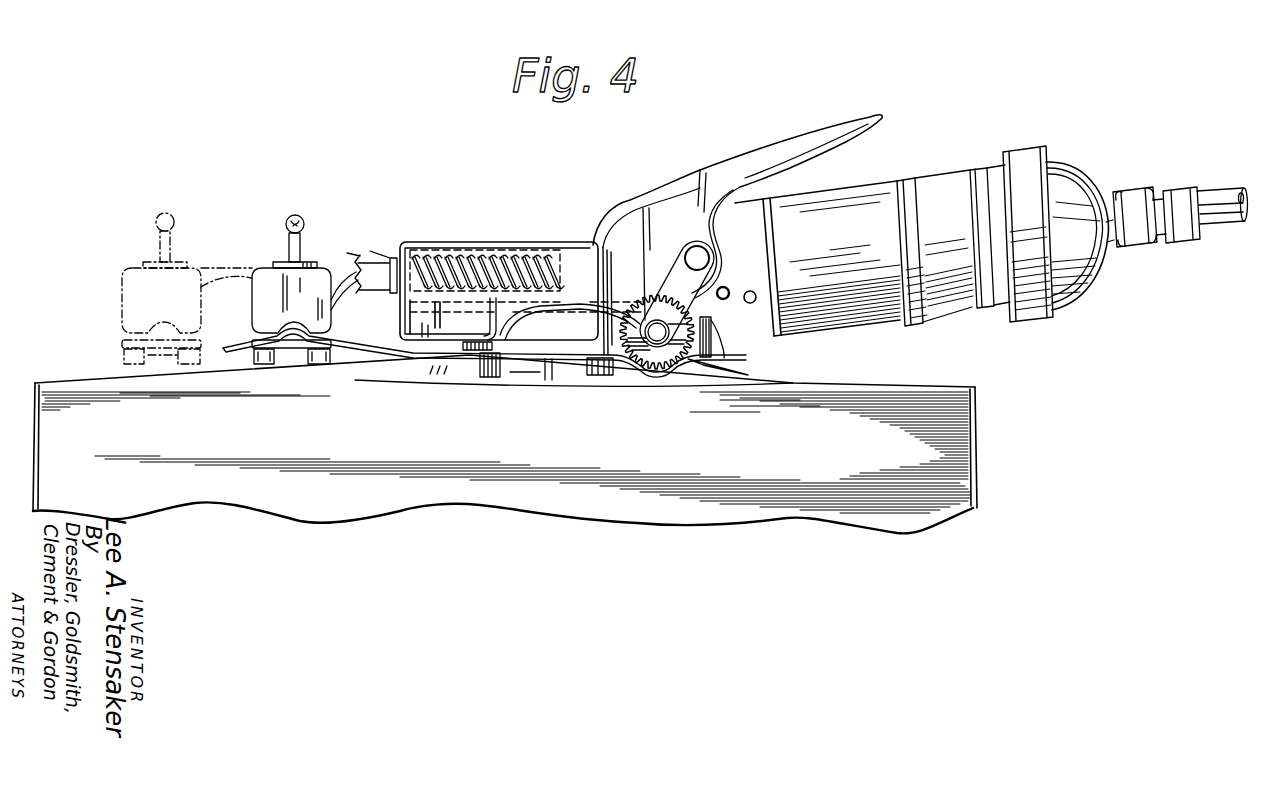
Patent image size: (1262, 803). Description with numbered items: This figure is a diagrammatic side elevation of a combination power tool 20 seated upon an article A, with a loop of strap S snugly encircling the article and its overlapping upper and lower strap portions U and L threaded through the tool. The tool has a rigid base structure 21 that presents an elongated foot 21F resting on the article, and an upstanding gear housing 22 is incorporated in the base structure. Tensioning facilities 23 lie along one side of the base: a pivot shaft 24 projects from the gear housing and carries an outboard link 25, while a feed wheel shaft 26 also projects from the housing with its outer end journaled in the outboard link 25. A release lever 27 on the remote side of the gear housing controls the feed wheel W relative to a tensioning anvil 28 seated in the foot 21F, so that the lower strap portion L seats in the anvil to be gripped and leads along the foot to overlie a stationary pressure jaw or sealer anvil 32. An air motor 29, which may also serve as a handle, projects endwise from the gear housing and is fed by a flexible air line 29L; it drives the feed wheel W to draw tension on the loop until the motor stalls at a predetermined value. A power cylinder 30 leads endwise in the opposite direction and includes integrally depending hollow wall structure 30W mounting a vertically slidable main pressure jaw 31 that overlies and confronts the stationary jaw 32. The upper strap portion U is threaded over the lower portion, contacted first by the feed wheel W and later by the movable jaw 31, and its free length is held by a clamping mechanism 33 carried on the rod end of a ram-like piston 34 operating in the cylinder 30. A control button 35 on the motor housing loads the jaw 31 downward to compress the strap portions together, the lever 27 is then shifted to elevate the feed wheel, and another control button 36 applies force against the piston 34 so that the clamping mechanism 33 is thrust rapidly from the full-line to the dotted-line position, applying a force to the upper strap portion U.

The combination power tool 20 is at (448, 231).
The rigid base structure 21 is at (748, 349).
The elongated foot 21F is at (589, 380).
The gear housing 22 is at (729, 215).
The tensioning facilities 23 is at (623, 337).
The pivot shaft 24 is at (697, 247).
The outboard link 25 is at (677, 294).
The feed wheel shaft 26 is at (652, 321).
The release lever 27 is at (788, 160).
The tensioning anvil 28 is at (683, 378).
The air motor 29 is at (949, 308).
The flexible air line 29L is at (1206, 228).
The power cylinder 30 is at (470, 234).
The hollow wall structure 30W is at (407, 320).
The main pressure jaw 31 is at (469, 342).
The stationary pressure jaw 32 is at (449, 378).
The clamping mechanism 33 is at (116, 320).
The piston 34 is at (561, 247).
The control button 35 is at (757, 297).
The control button 36 is at (728, 288).
The article A is at (489, 458).
The lower strap portion L is at (518, 372).
The strap S is at (73, 379).
The upper strap portion U is at (508, 357).
The feed wheel W is at (690, 337).